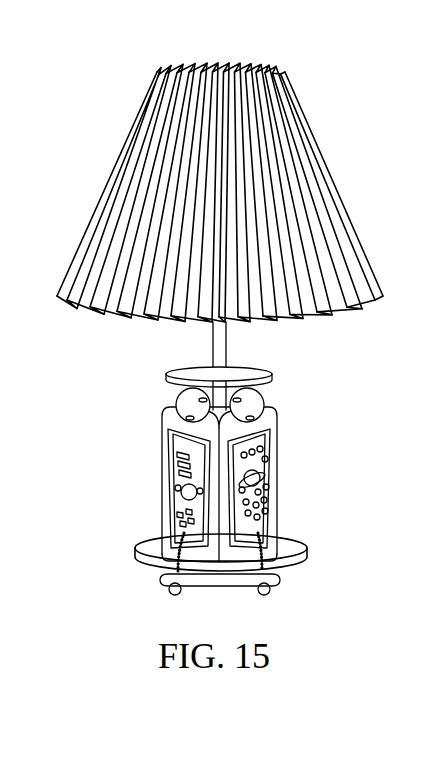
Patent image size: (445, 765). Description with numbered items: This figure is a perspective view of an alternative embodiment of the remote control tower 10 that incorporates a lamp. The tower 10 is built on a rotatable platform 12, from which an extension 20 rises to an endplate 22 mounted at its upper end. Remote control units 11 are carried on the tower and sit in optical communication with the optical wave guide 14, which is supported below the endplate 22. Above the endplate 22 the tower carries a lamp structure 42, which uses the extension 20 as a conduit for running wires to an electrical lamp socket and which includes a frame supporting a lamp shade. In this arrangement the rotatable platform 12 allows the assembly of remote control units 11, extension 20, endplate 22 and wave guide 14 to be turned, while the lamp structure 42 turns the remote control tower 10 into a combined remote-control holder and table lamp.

The remote control tower 10 is at (360, 360).
The remote control units 11 is at (288, 463).
The rotatable platform 12 is at (298, 538).
The optical wave guide 14 is at (265, 406).
The extension 20 is at (227, 343).
The endplate 22 is at (165, 372).
The lamp structure 42 is at (368, 258).